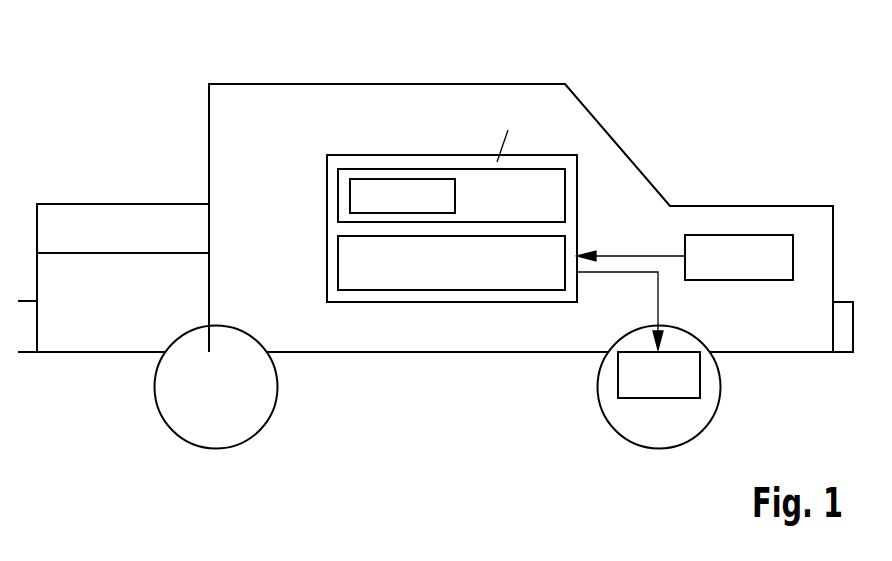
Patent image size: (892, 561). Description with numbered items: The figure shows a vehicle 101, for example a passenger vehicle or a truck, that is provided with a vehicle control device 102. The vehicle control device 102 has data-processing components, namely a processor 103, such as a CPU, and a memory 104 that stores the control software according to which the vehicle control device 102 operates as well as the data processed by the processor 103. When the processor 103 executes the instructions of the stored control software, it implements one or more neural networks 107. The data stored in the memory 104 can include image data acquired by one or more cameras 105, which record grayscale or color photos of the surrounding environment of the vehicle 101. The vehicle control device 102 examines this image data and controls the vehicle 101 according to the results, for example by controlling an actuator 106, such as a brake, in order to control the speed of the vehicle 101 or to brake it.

The vehicle 101 is at (362, 84).
The vehicle control device 102 is at (469, 155).
The processor 103 is at (338, 193).
The memory 104 is at (338, 258).
The cameras 105 is at (751, 235).
The actuator 106 is at (659, 398).
The neural networks 107 is at (457, 197).